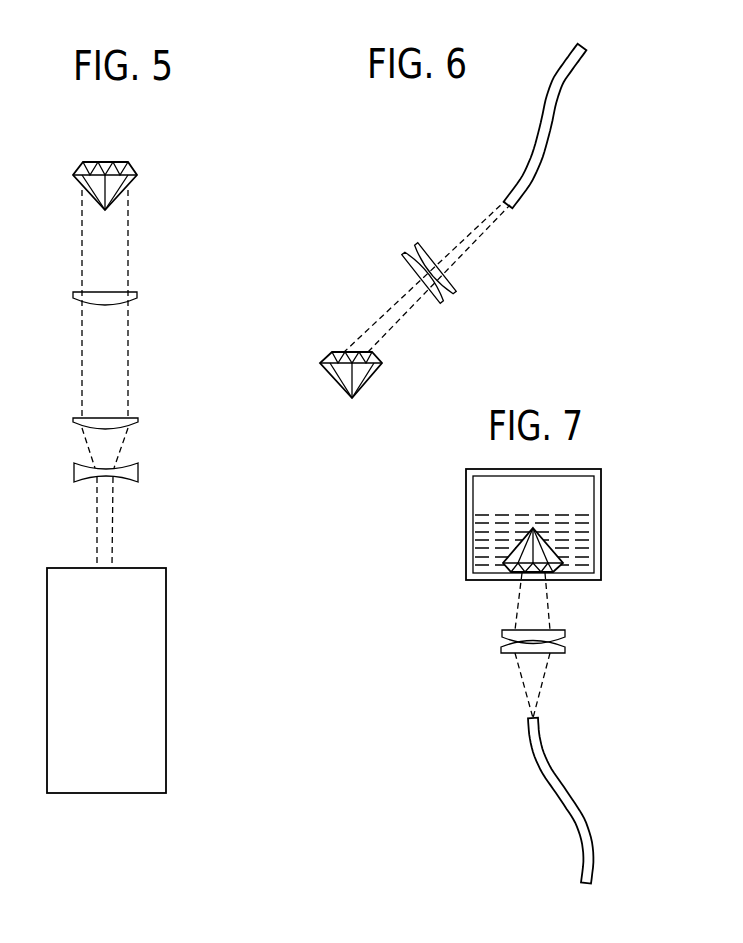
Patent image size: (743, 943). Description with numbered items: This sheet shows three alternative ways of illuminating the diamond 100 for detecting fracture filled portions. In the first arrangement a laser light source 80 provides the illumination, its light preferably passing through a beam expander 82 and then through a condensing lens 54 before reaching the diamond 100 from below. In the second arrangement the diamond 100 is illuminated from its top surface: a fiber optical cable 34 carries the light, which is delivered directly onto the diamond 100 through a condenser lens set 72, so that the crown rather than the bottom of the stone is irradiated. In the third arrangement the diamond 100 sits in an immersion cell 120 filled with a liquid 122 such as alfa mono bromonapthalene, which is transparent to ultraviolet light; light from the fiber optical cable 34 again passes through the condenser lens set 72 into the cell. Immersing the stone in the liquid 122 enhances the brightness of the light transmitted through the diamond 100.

In FIG. 5, the diamond 100 is at (127, 165).
In FIG. 6, the diamond 100 is at (373, 355).
In FIG. 7, the diamond 100 is at (512, 572).
In FIG. 5, the condensing lens 54 is at (137, 292).
In FIG. 5, the beam expander 82 is at (138, 467).
In FIG. 5, the laser light source 80 is at (166, 657).
In FIG. 6, the fiber optical cable 34 is at (538, 163).
In FIG. 7, the fiber optical cable 34 is at (548, 770).
In FIG. 6, the condenser lens set 72 is at (458, 290).
In FIG. 7, the condenser lens set 72 is at (563, 630).
In FIG. 7, the immersion cell 120 is at (601, 562).
In FIG. 7, the liquid 122 is at (572, 513).